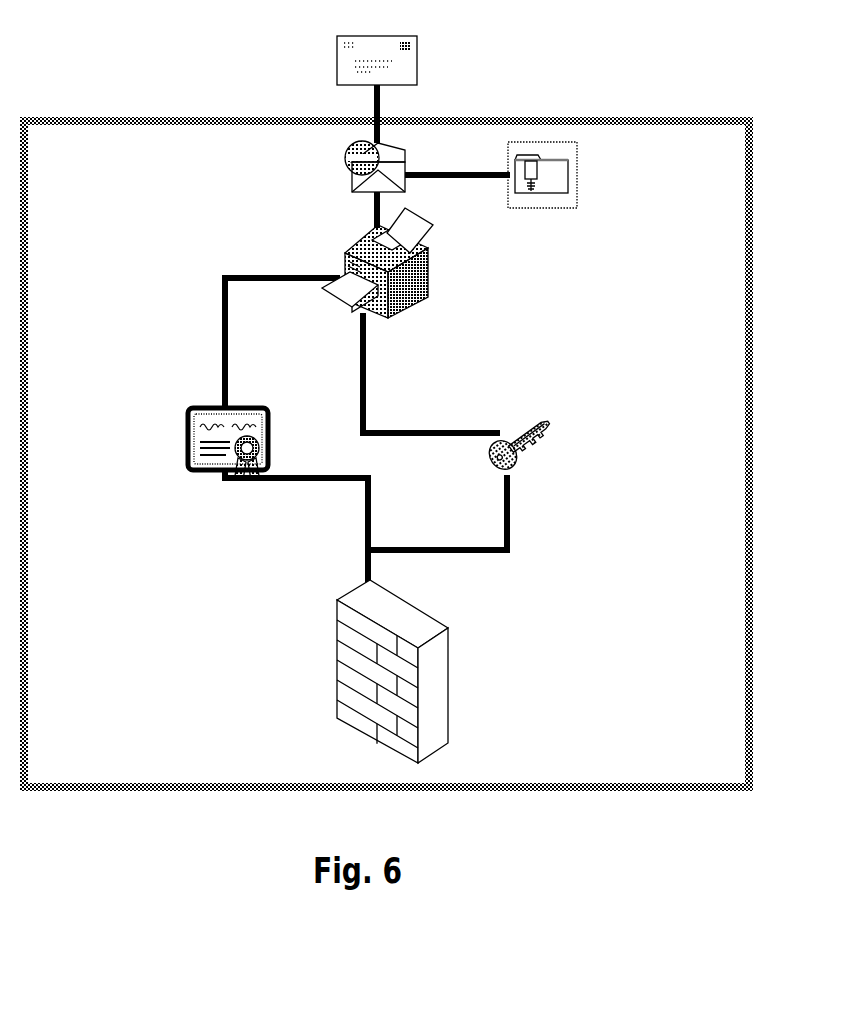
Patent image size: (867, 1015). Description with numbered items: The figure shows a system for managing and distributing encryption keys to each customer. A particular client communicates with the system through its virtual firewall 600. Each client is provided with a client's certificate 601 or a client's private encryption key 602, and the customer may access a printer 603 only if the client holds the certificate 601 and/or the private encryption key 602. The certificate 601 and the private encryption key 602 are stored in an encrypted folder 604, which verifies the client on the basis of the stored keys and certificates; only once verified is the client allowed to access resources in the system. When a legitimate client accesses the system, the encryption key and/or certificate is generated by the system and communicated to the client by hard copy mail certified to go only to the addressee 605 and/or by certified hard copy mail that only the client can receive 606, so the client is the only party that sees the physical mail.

The virtual firewall 600 is at (368, 705).
The client's certificate 601 is at (210, 468).
The client's private encryption key 602 is at (513, 473).
The printer 603 is at (343, 253).
The encrypted folder 604 is at (542, 193).
The hard copy mail certified to the addressee 605 is at (350, 148).
The certified hard copy mail 606 is at (417, 58).